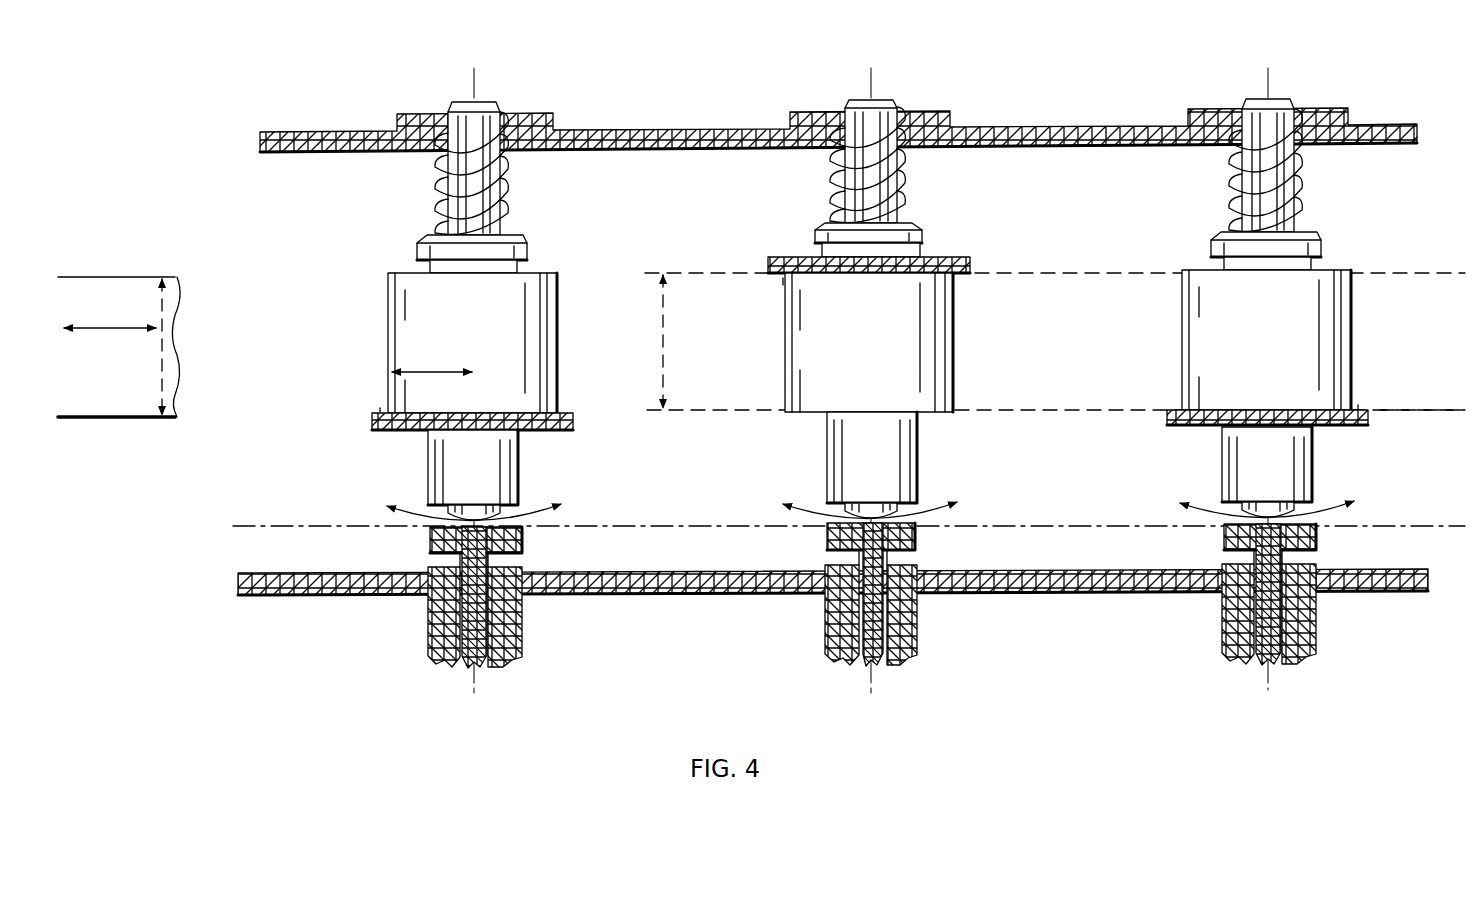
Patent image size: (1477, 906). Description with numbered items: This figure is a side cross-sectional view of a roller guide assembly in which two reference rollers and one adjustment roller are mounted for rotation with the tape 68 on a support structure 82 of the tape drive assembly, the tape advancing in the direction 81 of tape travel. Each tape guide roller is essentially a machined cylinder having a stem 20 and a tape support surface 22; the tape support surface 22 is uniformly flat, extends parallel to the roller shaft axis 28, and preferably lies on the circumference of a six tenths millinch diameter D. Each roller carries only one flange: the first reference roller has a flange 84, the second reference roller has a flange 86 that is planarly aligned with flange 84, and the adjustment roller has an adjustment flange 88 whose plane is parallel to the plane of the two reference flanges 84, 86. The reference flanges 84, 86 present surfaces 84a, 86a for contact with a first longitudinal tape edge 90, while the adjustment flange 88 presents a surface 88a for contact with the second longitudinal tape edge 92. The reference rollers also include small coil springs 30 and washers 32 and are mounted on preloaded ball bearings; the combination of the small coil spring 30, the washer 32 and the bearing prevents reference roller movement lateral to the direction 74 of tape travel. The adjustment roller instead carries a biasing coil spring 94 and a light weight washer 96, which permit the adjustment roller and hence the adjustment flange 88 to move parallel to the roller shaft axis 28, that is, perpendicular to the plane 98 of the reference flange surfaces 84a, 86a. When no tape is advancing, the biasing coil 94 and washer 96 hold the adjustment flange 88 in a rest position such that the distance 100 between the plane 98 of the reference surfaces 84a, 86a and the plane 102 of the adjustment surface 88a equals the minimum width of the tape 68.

The stem 20 is at (519, 470).
The tape support surface 22 is at (388, 352).
The roller shaft axis 28 is at (478, 82).
The small coil spring 30 is at (508, 183).
The washer 32 is at (527, 248).
The tape 68 is at (121, 373).
The direction of tape travel 74 is at (134, 327).
The direction of tape travel 81 is at (890, 504).
The support structure 82 is at (1417, 127).
The flange 84 is at (380, 432).
The reference flange surface 84a is at (380, 410).
The flange 86 is at (1348, 427).
The reference flange surface 86a is at (1366, 392).
The adjustment flange 88 is at (795, 257).
The adjustment flange surface 88a is at (783, 282).
The first longitudinal tape edge 90 is at (118, 420).
The second longitudinal tape edge 92 is at (106, 278).
The biasing coil spring 94 is at (905, 180).
The light weight washer 96 is at (922, 236).
The plane of the reference flange surfaces 98 is at (1412, 420).
The distance 100 is at (663, 338).
The plane of the adjustment surface 102 is at (655, 276).
The diameter D is at (396, 372).